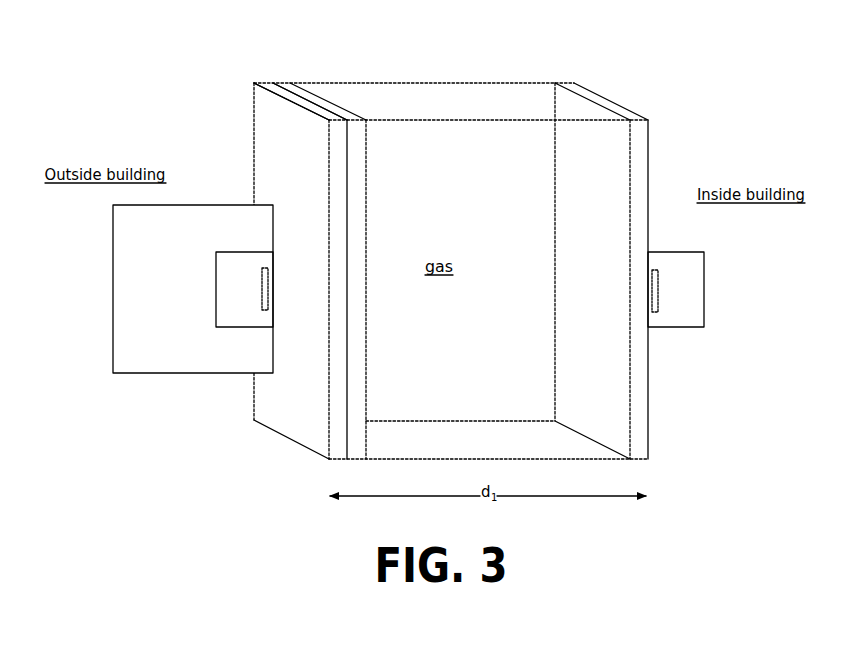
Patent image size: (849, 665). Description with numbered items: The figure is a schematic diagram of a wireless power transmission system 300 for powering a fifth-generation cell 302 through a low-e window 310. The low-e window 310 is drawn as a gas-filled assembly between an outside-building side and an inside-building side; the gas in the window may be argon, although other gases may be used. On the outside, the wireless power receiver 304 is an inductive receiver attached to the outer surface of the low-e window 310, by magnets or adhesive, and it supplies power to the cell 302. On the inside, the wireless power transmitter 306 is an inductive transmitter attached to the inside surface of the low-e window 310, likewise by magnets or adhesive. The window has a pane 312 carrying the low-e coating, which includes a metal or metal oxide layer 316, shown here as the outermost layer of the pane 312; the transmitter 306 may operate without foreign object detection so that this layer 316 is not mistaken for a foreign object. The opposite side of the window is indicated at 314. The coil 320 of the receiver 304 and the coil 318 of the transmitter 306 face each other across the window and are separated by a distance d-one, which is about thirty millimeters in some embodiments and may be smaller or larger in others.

The wireless power transmission system 300 is at (158, 80).
The 5G cell 302 is at (207, 234).
The wireless power receiver 304 is at (216, 298).
The wireless power transmitter 306 is at (704, 296).
The low-e window 310 is at (631, 87).
The pane 312 is at (213, 140).
The inner pipe end 314 is at (687, 138).
The metal or metal oxide layer 316 is at (255, 83).
The coil 318 is at (658, 280).
The coil 320 is at (262, 277).